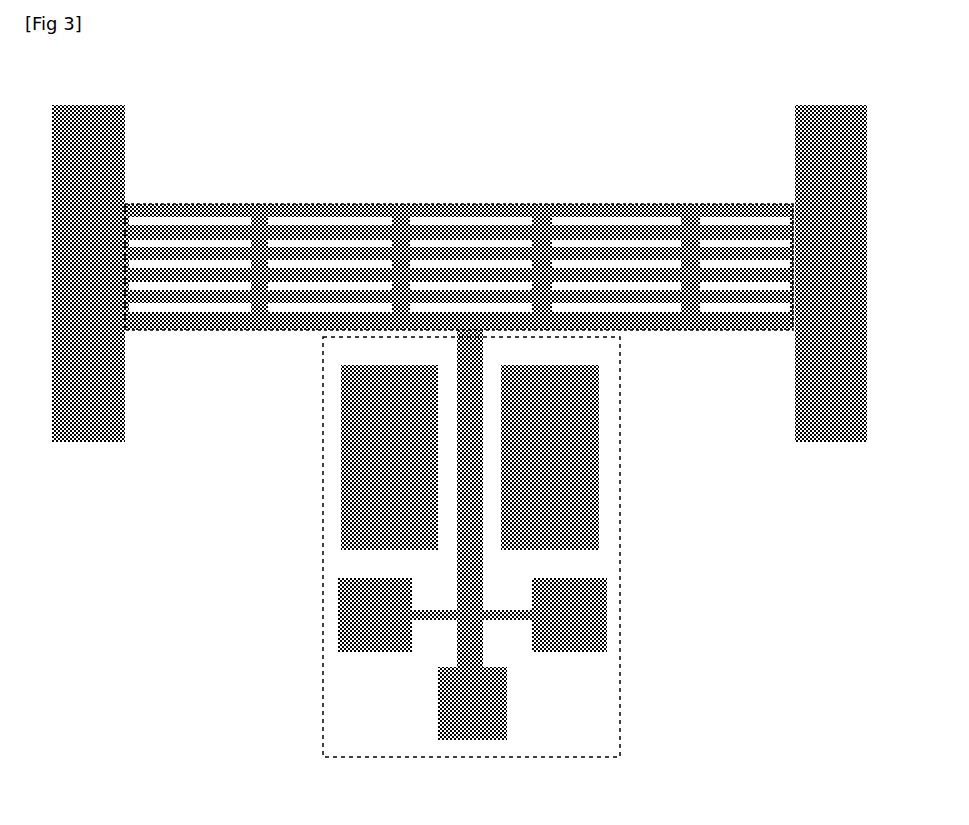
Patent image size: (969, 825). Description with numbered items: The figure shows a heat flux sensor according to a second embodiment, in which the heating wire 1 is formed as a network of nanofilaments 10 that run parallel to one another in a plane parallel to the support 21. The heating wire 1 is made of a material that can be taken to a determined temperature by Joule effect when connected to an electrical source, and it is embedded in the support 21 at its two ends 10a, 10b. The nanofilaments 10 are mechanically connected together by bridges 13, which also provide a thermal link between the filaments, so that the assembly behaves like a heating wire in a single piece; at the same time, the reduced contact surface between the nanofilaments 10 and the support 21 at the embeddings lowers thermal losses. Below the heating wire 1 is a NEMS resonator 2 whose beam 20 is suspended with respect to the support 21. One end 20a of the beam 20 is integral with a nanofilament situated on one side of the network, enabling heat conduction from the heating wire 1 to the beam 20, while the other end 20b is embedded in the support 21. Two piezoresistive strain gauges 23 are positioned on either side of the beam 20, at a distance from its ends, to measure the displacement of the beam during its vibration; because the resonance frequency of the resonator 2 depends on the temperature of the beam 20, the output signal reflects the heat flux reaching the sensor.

The heating wire 1 is at (459, 202).
The resonator 2 is at (482, 541).
The nanofilaments 10 is at (617, 268).
The first end of the heating wire 10a is at (133, 201).
The second end of the heating wire 10b is at (777, 201).
The bridges 13 is at (537, 240).
The beam 20 is at (482, 516).
The first end of the beam 20a is at (494, 333).
The second end of the beam 20b is at (496, 651).
The support 21 is at (112, 170).
The piezoresistive strain gauges 23 is at (436, 621).